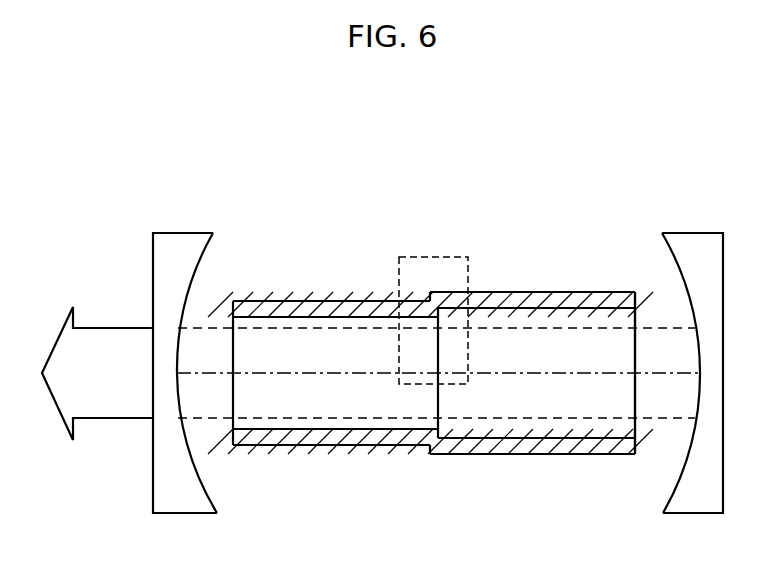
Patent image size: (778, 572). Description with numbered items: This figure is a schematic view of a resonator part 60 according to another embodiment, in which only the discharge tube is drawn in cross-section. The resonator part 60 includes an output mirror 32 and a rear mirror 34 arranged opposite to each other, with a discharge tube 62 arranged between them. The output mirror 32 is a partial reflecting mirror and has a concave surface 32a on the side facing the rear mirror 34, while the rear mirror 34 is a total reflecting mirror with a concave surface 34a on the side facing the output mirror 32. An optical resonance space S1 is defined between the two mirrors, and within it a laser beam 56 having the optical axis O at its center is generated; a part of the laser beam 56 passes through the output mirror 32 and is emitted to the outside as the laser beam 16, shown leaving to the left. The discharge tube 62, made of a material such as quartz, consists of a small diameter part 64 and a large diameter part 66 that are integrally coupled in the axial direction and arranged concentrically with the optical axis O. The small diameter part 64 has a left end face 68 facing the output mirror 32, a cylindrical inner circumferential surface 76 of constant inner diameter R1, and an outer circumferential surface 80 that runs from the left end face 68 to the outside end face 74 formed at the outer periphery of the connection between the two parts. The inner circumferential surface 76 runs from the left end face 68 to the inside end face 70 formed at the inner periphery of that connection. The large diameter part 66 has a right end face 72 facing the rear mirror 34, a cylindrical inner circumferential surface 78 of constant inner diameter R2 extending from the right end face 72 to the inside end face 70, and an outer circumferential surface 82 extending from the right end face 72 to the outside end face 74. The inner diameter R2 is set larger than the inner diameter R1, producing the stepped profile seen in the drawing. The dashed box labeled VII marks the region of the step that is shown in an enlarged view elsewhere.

The laser beam 16 is at (105, 328).
The output mirror 32 is at (180, 233).
The concave surface 32a is at (205, 258).
The rear mirror 34 is at (700, 233).
The concave surface 34a is at (672, 258).
The laser beam 56 is at (218, 328).
The resonator part 60 is at (672, 93).
The discharge tube 62 is at (518, 206).
The small diameter part 64 is at (320, 310).
The large diameter part 66 is at (537, 292).
The left end face 68 is at (233, 445).
The inside end face 70 is at (445, 432).
The right end face 72 is at (636, 454).
The outside end face 74 is at (430, 290).
The inner circumferential surface 76 is at (372, 424).
The inner circumferential surface 78 is at (568, 432).
The outer circumferential surface 80 is at (258, 301).
The outer circumferential surface 82 is at (584, 292).
The optical resonance space S1 is at (228, 361).
The inner diameter R1 is at (254, 317).
The inner diameter R2 is at (518, 308).
The optical axis O is at (658, 375).
The section line VII is at (457, 257).